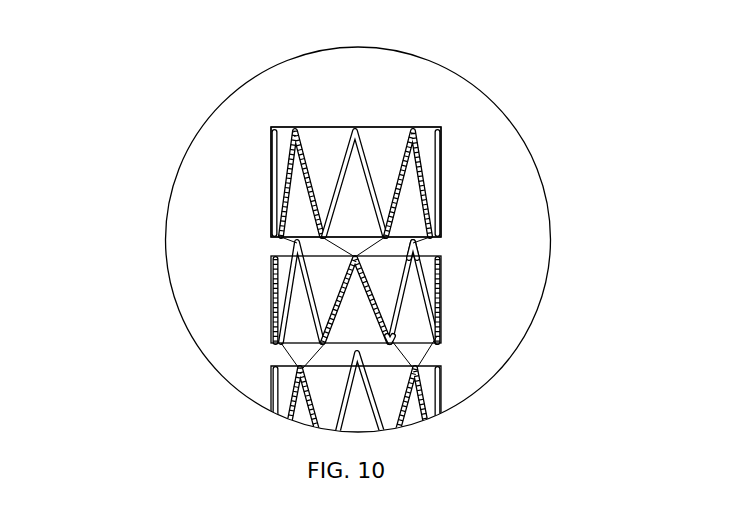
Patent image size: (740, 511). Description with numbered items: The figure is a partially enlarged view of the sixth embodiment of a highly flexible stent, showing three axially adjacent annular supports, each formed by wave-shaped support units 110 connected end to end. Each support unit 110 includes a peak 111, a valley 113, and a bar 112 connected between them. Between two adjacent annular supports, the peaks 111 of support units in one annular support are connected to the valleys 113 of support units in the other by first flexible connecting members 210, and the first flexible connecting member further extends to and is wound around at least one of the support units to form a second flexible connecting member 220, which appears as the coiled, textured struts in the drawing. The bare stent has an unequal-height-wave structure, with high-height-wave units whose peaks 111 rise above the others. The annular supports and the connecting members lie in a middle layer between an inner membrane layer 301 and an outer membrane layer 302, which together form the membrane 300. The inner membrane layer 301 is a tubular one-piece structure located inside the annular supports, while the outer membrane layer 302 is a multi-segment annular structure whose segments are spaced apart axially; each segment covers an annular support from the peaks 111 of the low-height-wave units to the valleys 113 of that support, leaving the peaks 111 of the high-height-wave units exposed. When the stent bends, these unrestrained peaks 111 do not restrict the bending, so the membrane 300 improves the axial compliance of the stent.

The support unit 110 is at (480, 223).
The peak 111 is at (418, 243).
The bar 112 is at (405, 295).
The valley 113 is at (390, 343).
The first flexible connecting member 210 is at (338, 252).
The second flexible connecting member 220 is at (428, 198).
The membrane 300 is at (236, 289).
The inner membrane layer 301 is at (330, 358).
The outer membrane layer 302 is at (322, 282).